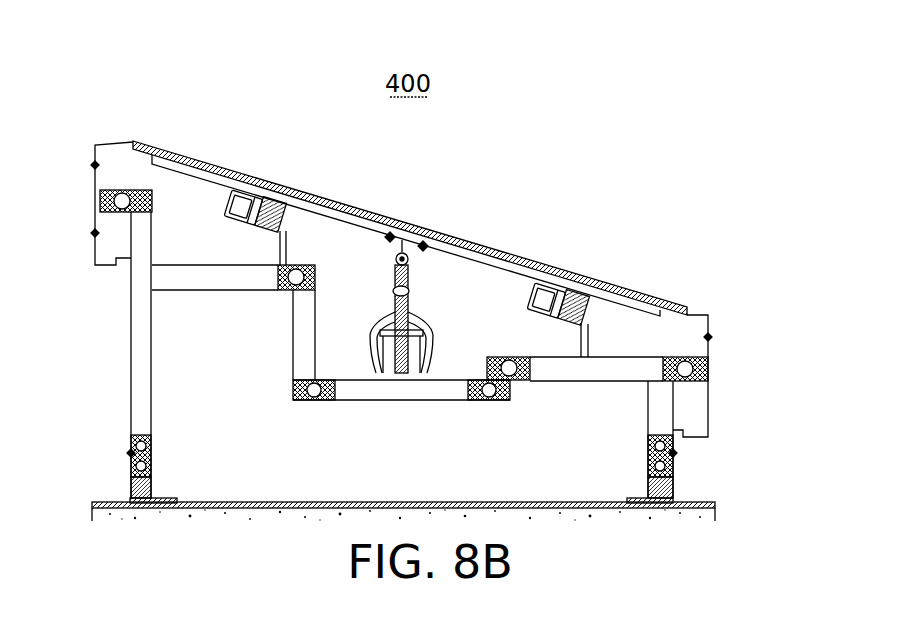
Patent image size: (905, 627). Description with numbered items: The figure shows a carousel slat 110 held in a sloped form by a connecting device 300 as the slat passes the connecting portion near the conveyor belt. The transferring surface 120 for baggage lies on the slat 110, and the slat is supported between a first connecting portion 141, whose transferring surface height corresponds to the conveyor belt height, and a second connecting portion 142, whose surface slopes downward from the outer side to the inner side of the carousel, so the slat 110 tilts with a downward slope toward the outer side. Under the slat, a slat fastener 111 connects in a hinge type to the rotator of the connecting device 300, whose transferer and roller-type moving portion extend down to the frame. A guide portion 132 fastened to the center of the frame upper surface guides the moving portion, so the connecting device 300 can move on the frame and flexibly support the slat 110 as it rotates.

The first connecting portion 141 is at (143, 141).
The slat 110 is at (197, 163).
The transferring surface 120 is at (350, 208).
The slat fastener 111 is at (405, 234).
The connecting device 300 is at (422, 292).
The second connecting portion 142 is at (680, 303).
The guide portion 132 is at (404, 382).